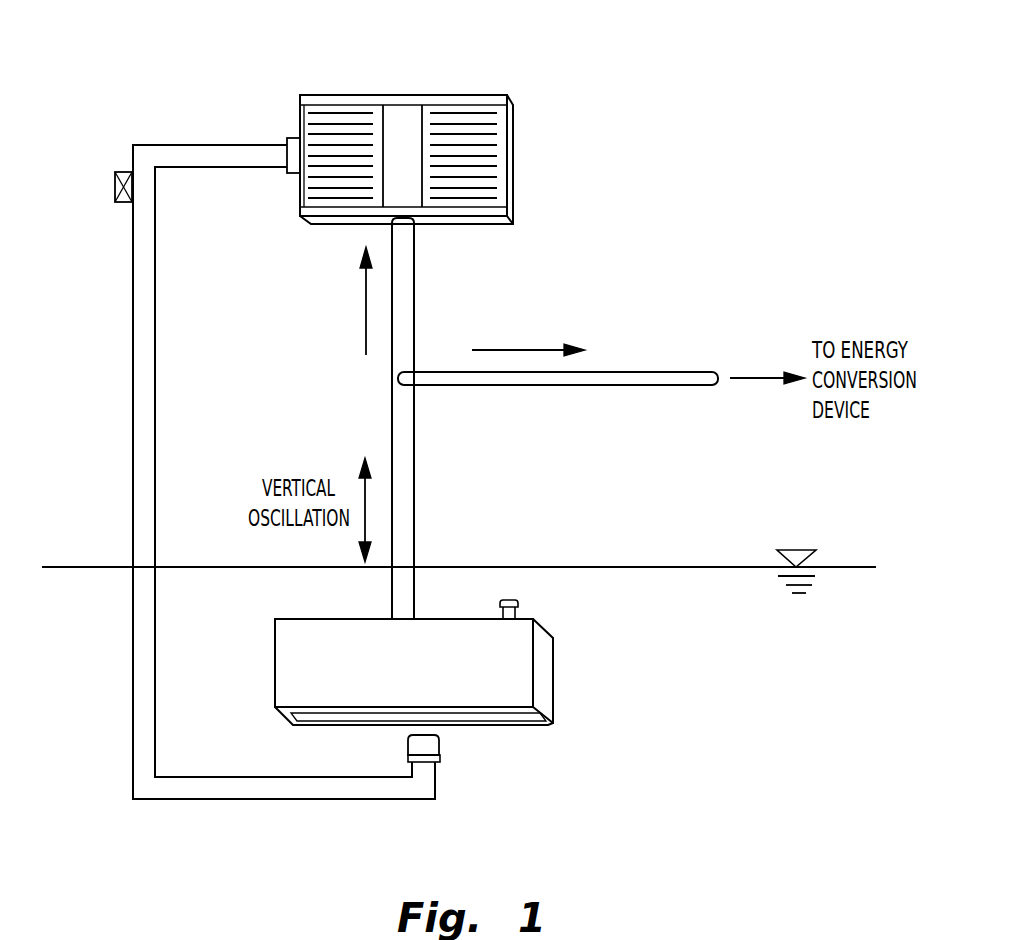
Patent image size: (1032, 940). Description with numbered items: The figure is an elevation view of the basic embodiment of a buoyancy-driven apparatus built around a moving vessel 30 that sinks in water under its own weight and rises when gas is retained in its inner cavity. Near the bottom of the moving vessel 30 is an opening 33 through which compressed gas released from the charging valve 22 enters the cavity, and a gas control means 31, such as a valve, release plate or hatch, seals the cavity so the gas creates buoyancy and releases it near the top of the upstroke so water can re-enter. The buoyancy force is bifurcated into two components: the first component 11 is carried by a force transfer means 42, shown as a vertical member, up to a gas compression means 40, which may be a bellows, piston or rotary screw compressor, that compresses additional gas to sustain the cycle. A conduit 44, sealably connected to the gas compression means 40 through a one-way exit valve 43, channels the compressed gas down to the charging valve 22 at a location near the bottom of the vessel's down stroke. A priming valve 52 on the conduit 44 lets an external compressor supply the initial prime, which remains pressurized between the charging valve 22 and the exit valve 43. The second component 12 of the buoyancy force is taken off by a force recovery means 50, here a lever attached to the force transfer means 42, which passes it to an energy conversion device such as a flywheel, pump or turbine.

The first component of the buoyancy force 11 is at (366, 312).
The second component of the buoyancy force 12 is at (533, 350).
The charging valve 22 is at (440, 750).
The moving vessel 30 is at (460, 705).
The gas control means 31 is at (520, 603).
The opening 33 is at (525, 712).
The gas compression means 40 is at (514, 152).
The force transfer means 42 is at (414, 520).
The one-way exit valve 43 is at (287, 138).
The conduit 44 is at (133, 425).
The force recovery means 50 is at (680, 385).
The priming valve 52 is at (115, 188).